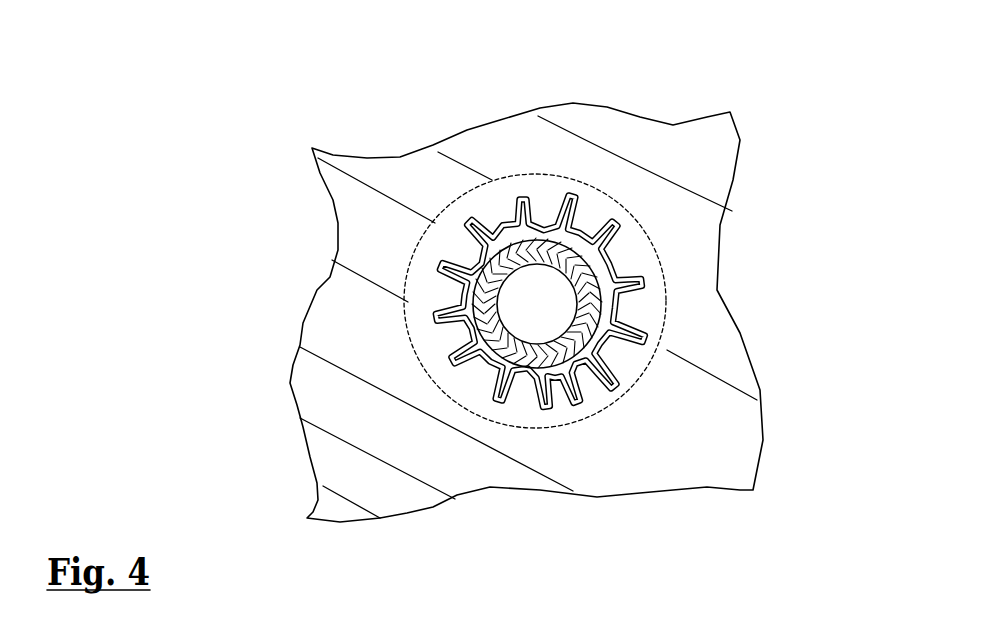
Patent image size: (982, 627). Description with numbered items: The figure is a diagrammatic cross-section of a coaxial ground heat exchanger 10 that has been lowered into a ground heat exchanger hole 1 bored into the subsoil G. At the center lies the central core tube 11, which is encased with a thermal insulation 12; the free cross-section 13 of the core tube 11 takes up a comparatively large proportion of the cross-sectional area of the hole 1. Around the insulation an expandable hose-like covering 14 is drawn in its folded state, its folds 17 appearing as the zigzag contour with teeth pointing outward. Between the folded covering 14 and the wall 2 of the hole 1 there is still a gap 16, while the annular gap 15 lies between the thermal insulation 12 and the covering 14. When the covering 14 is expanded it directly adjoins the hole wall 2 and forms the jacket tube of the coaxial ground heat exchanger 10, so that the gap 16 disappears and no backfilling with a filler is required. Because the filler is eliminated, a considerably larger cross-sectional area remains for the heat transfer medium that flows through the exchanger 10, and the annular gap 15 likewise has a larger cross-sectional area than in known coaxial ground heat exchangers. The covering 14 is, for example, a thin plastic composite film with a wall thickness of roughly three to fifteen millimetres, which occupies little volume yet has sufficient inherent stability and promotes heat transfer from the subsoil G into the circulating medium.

The subsoil G is at (661, 150).
The ground heat exchanger hole 1 is at (501, 202).
The wall 2 is at (492, 283).
The coaxial ground heat exchanger 10 is at (655, 297).
The central core tube 11 is at (590, 272).
The thermal insulation 12 is at (578, 345).
The free cross-section 13 is at (540, 317).
The expandable hose-like covering 14 is at (470, 270).
The annular gap 15 is at (555, 210).
The gap 16 is at (423, 347).
The folds 17 is at (547, 413).